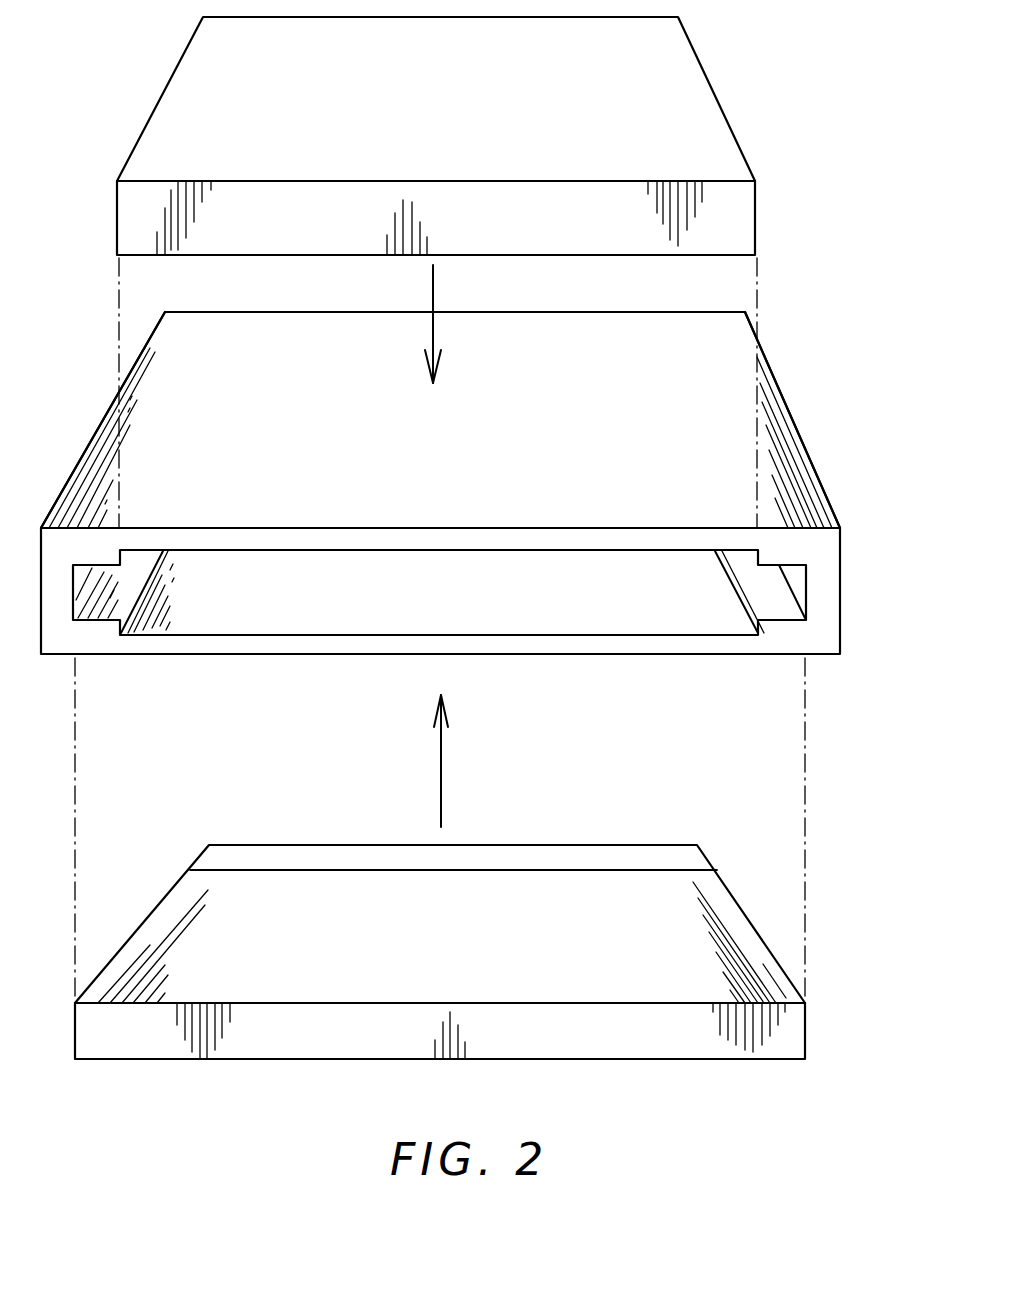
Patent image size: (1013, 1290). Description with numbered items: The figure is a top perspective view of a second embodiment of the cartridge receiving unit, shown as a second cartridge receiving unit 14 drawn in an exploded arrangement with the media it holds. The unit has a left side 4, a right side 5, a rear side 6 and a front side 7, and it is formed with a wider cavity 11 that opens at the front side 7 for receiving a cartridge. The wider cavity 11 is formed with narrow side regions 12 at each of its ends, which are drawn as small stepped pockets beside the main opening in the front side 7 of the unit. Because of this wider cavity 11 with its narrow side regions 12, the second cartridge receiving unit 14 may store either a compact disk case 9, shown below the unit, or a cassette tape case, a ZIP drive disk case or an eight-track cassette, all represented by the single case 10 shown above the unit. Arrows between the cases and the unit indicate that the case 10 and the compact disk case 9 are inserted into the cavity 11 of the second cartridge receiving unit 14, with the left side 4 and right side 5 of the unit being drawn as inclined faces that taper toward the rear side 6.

The cassette tape case 10 is at (689, 83).
The rear side 6 is at (645, 312).
The second cartridge receiving unit 14 is at (795, 337).
The left side 4 is at (107, 413).
The right side 5 is at (808, 455).
The narrow side regions 12 is at (95, 593).
The wider cavity 11 is at (657, 615).
The front side 7 is at (826, 638).
The compact disk case 9 is at (677, 918).